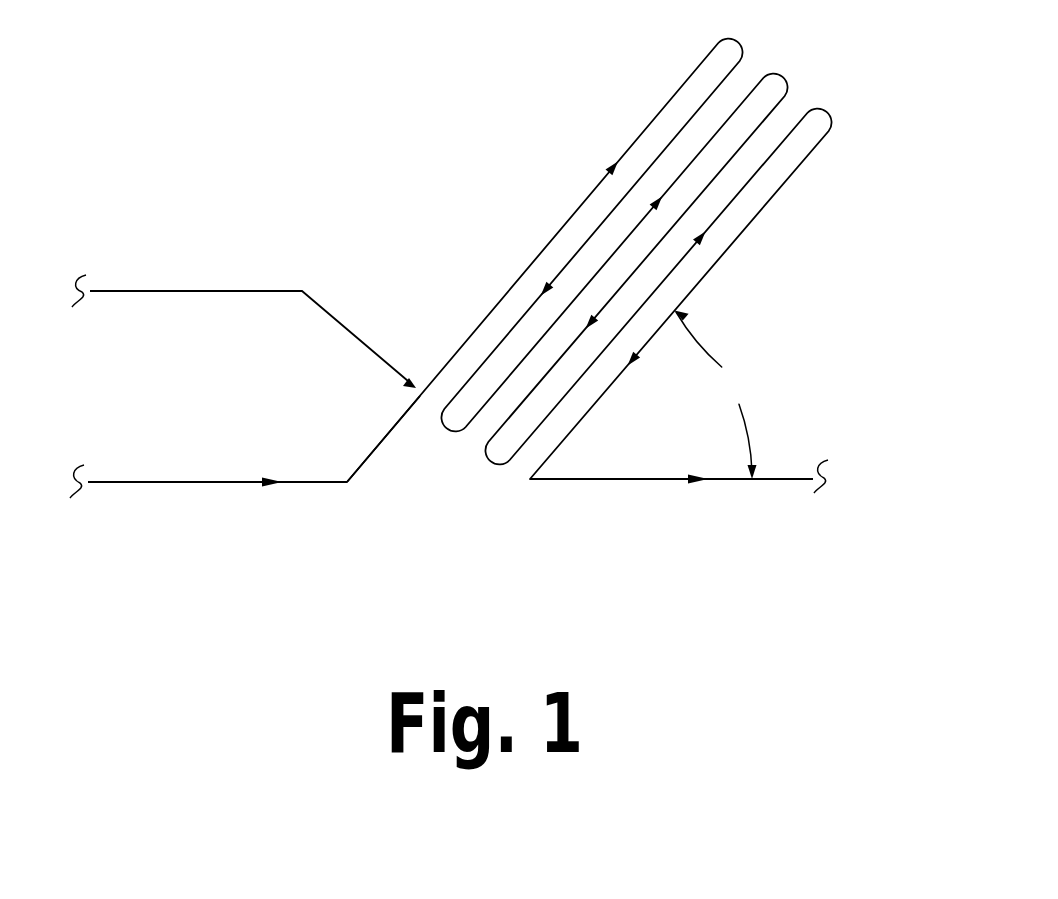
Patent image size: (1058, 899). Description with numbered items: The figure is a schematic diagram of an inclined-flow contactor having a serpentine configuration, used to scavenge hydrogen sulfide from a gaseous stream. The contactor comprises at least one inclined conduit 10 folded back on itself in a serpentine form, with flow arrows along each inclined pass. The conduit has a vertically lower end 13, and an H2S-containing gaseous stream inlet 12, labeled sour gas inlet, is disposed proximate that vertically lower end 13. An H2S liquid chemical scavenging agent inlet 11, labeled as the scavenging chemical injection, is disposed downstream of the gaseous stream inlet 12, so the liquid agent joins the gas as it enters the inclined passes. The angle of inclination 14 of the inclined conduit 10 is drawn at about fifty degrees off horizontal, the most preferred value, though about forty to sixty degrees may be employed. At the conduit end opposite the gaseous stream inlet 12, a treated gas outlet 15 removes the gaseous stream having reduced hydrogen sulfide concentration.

The inclined conduit 10 is at (562, 227).
The H2S liquid chemical scavenging agent inlet 11 is at (418, 393).
The H2S-containing gaseous stream inlet 12 is at (100, 481).
The vertically lower end 13 is at (337, 432).
The angle of inclination 14 is at (632, 418).
The treated gas outlet 15 is at (793, 477).